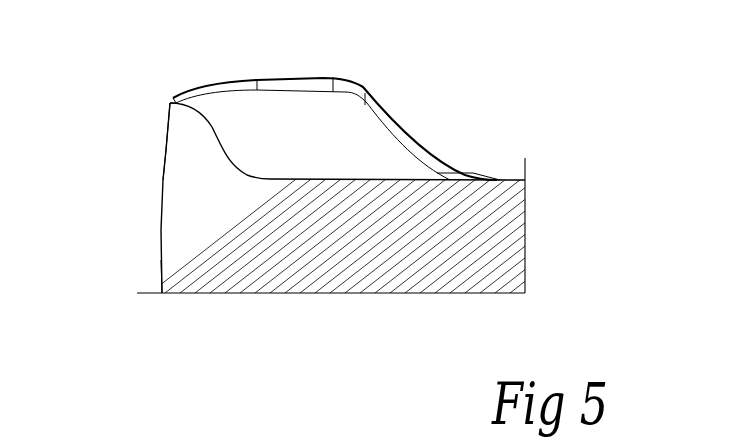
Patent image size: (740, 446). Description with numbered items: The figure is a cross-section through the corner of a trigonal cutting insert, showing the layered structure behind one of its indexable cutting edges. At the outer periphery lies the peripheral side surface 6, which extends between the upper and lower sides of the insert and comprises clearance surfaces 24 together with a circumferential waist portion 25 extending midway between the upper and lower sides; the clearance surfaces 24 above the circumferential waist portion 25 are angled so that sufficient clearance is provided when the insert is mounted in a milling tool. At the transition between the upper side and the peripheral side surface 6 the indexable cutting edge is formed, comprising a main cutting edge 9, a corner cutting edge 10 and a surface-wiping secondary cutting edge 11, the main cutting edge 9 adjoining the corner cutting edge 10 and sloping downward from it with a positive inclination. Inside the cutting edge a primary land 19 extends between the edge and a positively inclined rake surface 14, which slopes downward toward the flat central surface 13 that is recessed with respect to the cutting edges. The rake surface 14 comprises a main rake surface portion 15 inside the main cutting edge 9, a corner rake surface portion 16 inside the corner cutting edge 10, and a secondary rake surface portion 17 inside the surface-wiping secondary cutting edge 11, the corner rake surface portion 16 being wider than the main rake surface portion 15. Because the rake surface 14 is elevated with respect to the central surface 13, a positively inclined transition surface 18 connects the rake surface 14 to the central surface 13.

The peripheral side surface 6 is at (162, 218).
The main cutting edge 9 is at (167, 104).
The corner cutting edge 10 is at (210, 85).
The surface-wiping secondary cutting edge 11 is at (295, 82).
The central surface 13 is at (508, 180).
The rake surface 14 is at (268, 85).
The main rake surface portion 15 is at (188, 110).
The corner rake surface portion 16 is at (231, 85).
The secondary rake surface portion 17 is at (316, 82).
The transition surface 18 is at (300, 158).
The primary land 19 is at (178, 92).
The clearance surface 24 is at (165, 170).
The circumferential waist portion 25 is at (162, 265).